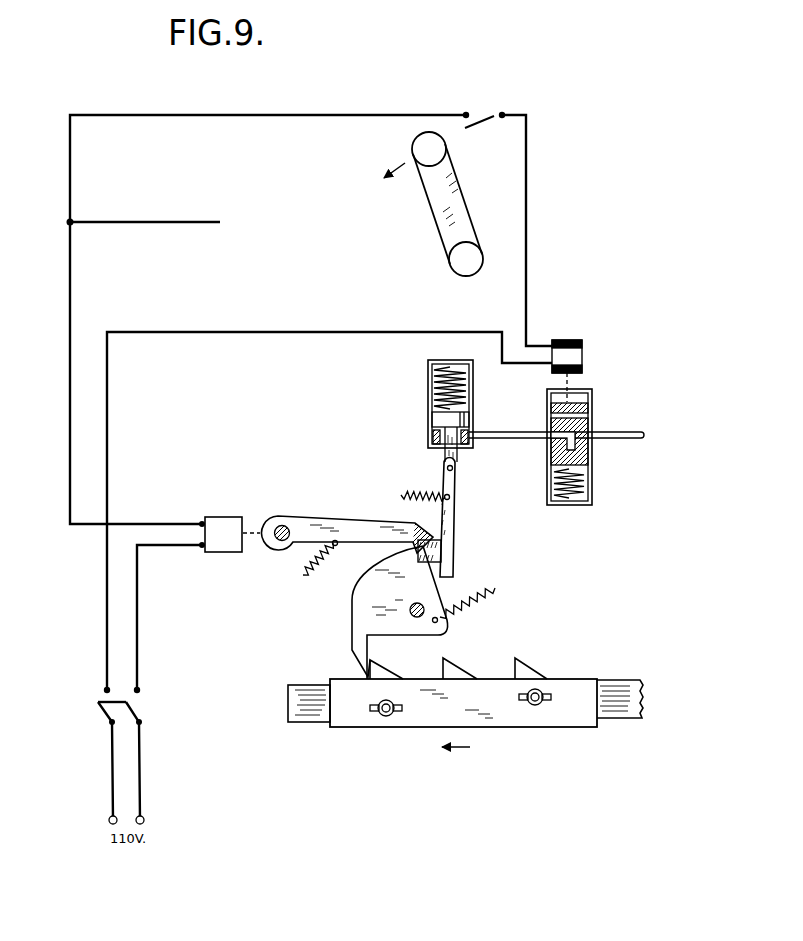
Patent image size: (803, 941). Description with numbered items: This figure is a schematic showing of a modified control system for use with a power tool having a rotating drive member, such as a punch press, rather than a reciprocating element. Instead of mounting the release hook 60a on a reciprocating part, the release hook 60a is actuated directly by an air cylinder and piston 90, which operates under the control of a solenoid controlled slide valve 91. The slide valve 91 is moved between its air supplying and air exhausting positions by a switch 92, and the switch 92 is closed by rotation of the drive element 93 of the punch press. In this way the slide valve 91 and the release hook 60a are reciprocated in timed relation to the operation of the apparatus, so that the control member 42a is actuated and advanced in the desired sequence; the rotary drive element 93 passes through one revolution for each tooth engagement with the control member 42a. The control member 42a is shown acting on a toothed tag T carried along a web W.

The switch 92 is at (484, 118).
The drive element 93 is at (437, 217).
The air cylinder and piston 90 is at (428, 409).
The solenoid controlled slide valve 91 is at (602, 383).
The release hook 60a is at (452, 508).
The control member 42a is at (358, 603).
The web W is at (303, 715).
The tag T is at (538, 717).